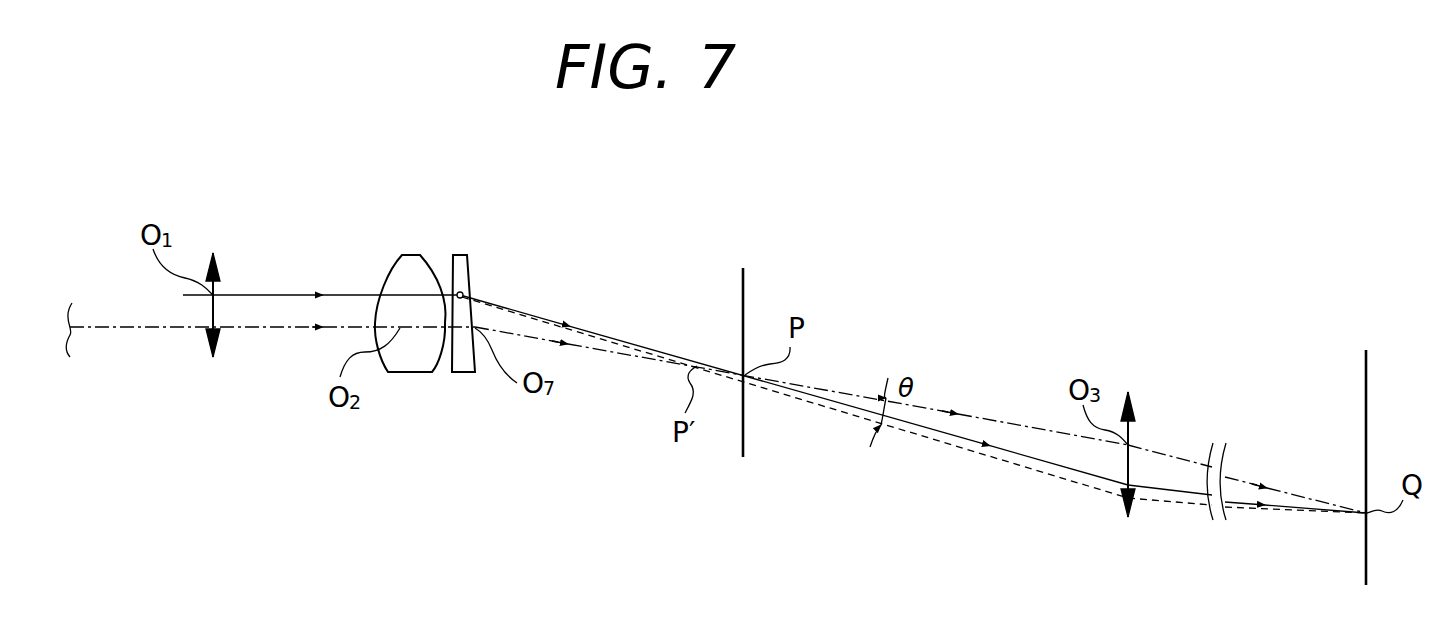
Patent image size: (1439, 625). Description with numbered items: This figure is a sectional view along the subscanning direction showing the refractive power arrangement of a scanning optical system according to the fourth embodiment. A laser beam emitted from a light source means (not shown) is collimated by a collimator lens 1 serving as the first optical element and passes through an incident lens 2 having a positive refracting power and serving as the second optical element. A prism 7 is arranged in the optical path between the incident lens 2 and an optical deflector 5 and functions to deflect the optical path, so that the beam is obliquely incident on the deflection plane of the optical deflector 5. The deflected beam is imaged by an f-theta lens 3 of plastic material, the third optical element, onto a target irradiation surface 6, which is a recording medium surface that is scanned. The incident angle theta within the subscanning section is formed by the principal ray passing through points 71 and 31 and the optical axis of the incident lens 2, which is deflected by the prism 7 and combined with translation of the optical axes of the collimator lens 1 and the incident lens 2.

The collimator lens 1 is at (213, 253).
The incident lens 2 is at (435, 240).
The prism 7 is at (458, 254).
The principal ray point on prism 71 is at (463, 294).
The optical deflector 5 is at (745, 278).
The f-θ lens 3 is at (1128, 392).
The principal ray point on f-θ lens 31 is at (1126, 487).
The target irradiation surface 6 is at (1367, 373).